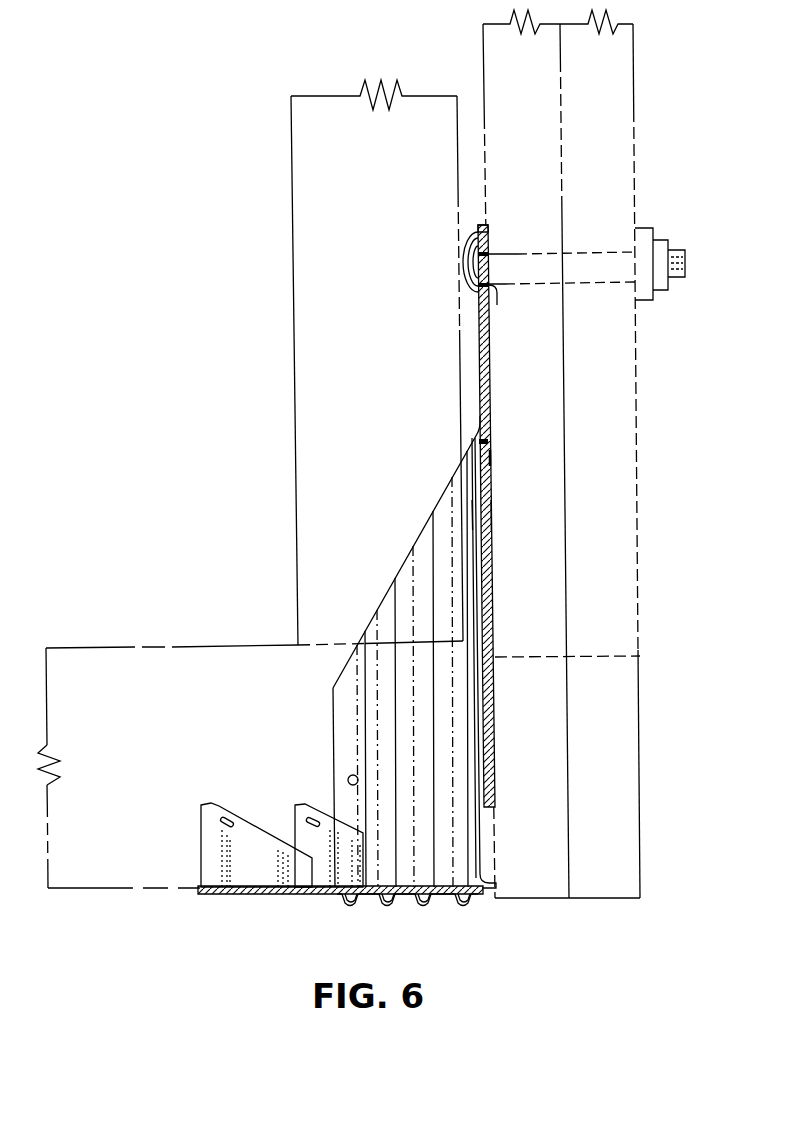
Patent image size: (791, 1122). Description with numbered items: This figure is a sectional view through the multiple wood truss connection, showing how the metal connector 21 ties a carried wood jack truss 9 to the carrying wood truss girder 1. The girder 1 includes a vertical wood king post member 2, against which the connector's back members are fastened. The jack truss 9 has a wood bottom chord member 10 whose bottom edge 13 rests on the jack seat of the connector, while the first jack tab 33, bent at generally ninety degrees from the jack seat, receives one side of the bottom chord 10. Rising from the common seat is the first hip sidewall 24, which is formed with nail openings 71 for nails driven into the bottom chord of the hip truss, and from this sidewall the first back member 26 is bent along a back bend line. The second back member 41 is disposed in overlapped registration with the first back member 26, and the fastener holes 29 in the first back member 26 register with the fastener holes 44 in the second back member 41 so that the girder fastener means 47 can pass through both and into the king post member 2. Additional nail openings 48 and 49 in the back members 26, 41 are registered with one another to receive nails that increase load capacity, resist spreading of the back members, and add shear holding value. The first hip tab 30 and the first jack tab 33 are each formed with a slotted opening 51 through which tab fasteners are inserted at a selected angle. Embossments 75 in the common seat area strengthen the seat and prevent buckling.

The carrying wood truss girder 1 is at (617, 908).
The vertical wood king post member 2 is at (477, 31).
The carried wood jack truss 9 is at (286, 184).
The wood bottom chord member 10 is at (120, 640).
The bottom edge 13 is at (112, 892).
The metal connector 21 is at (436, 494).
The first hip sidewall 24 is at (402, 588).
The first back member 26 is at (478, 228).
The fastener holes 29 is at (468, 265).
The first hip tab 30 is at (306, 828).
The first jack tab 33 is at (212, 832).
The second back member 41 is at (492, 247).
The fastener holes 44 is at (490, 280).
The girder fastener means 47 is at (533, 253).
The nail openings 48 is at (472, 510).
The nail openings 49 is at (490, 510).
The slotted opening 51 is at (226, 815).
The nail openings 71 is at (352, 775).
The embossments 75 is at (463, 906).